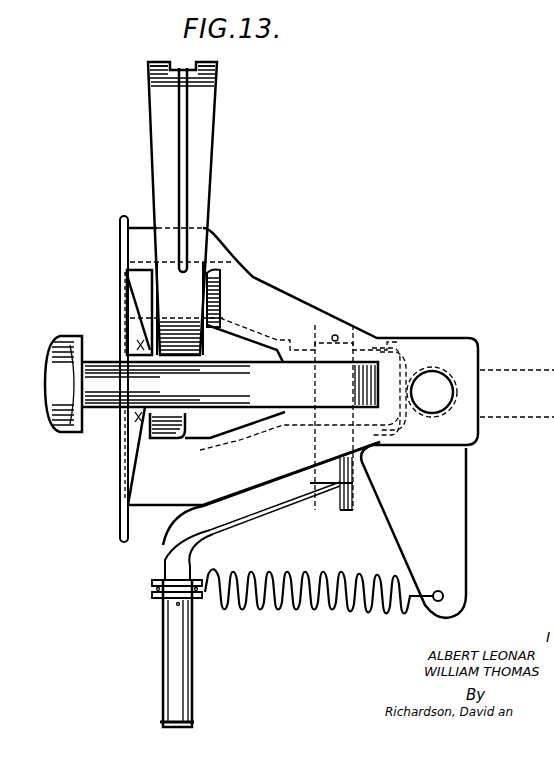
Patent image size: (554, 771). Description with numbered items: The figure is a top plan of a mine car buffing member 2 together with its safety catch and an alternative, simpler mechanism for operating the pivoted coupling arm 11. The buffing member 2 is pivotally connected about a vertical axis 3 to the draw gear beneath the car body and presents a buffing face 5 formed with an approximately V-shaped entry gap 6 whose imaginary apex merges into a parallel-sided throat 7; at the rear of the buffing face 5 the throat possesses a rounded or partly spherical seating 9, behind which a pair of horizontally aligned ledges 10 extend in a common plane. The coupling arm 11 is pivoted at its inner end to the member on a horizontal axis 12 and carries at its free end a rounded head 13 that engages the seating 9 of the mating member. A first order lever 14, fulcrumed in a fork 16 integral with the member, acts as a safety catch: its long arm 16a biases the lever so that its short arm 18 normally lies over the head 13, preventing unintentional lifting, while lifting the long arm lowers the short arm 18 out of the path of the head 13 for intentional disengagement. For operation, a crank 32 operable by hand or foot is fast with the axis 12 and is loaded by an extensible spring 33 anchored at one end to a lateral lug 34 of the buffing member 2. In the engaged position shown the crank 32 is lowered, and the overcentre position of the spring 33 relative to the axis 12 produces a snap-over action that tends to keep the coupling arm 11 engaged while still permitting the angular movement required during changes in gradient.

The buffing member 2 is at (260, 308).
The vertical axis 3 is at (437, 378).
The buffing face 5 is at (124, 232).
The V-shaped entry gap 6 is at (147, 333).
The throat 7 is at (137, 405).
The seating 9 is at (120, 330).
The ledges 10 is at (165, 430).
The coupling arm 11 is at (232, 383).
The horizontal axis 12 is at (368, 467).
The head 13 is at (70, 360).
The first order lever 14 is at (140, 114).
The fork 16 is at (213, 305).
The long arm 16a is at (202, 110).
The short arm 18 is at (177, 308).
The crank 32 is at (175, 633).
The extensible spring 33 is at (336, 608).
The lateral lug 34 is at (448, 565).